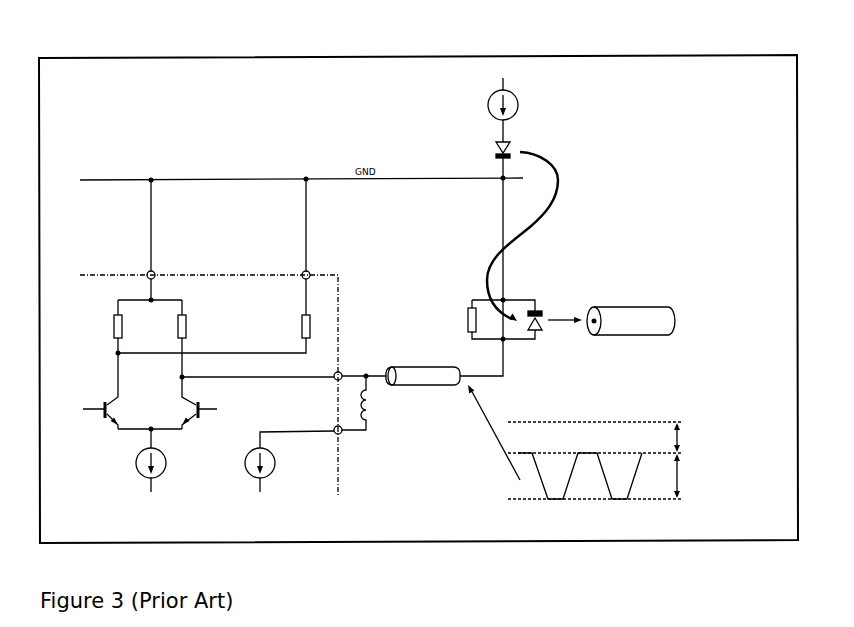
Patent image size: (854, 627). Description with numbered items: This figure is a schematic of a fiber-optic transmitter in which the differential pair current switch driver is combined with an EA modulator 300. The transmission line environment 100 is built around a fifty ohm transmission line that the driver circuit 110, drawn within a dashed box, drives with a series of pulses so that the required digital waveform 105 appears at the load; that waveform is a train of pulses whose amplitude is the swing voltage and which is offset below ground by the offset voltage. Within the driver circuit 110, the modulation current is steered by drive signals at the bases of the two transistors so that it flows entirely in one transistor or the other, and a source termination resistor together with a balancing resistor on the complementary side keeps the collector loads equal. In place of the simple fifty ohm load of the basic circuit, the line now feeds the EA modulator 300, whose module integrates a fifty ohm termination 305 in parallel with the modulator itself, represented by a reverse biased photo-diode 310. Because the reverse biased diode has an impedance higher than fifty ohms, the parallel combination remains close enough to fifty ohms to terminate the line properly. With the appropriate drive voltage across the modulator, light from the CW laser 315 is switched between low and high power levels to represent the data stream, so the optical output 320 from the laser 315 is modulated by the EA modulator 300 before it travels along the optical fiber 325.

The transmission line environment 100 is at (398, 452).
The digital waveform 105 is at (667, 391).
The driver circuit 110 is at (337, 310).
The EA modulator 300 is at (541, 340).
The 50Ω termination 305 is at (470, 305).
The reverse biased photo-diode 310 is at (540, 309).
The CW laser 315 is at (486, 151).
The optical output 320 is at (538, 235).
The optical fiber 325 is at (637, 313).